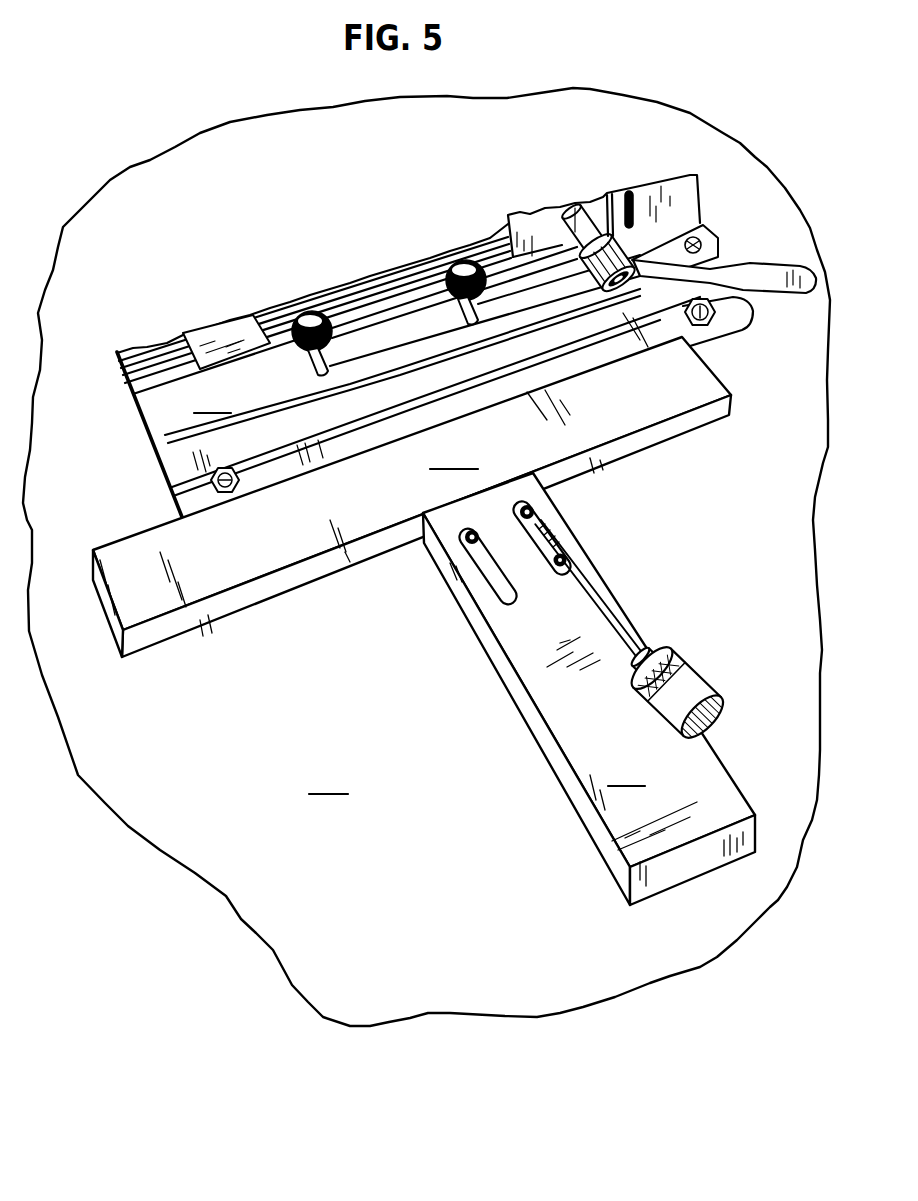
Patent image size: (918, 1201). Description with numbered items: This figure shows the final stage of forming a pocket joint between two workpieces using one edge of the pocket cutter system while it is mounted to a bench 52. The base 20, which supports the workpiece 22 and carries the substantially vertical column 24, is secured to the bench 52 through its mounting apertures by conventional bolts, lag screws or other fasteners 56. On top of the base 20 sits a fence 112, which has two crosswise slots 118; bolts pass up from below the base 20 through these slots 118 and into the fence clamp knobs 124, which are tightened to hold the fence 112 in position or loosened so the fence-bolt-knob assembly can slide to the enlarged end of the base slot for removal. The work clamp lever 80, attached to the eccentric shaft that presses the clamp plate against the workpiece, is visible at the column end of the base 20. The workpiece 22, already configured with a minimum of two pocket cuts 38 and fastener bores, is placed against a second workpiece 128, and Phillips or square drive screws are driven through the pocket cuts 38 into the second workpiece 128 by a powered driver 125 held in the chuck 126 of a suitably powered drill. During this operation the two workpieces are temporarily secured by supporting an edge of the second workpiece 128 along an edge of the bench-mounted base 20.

The base 20 is at (617, 261).
The workpiece 22 is at (589, 689).
The column 24 is at (604, 185).
The pocket cuts 38 is at (507, 560).
The bench 52 is at (426, 557).
The fasteners 56 is at (447, 404).
The work clamp lever 80 is at (724, 251).
The fence 112 is at (408, 370).
The crosswise slots 118 is at (393, 336).
The fence clamp knobs 124 is at (389, 262).
The powered driver 125 is at (605, 582).
The chuck 126 is at (690, 683).
The second workpiece 128 is at (412, 485).